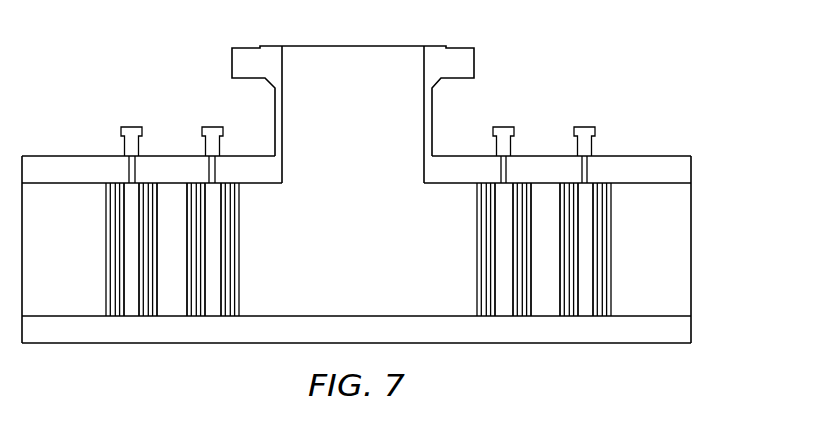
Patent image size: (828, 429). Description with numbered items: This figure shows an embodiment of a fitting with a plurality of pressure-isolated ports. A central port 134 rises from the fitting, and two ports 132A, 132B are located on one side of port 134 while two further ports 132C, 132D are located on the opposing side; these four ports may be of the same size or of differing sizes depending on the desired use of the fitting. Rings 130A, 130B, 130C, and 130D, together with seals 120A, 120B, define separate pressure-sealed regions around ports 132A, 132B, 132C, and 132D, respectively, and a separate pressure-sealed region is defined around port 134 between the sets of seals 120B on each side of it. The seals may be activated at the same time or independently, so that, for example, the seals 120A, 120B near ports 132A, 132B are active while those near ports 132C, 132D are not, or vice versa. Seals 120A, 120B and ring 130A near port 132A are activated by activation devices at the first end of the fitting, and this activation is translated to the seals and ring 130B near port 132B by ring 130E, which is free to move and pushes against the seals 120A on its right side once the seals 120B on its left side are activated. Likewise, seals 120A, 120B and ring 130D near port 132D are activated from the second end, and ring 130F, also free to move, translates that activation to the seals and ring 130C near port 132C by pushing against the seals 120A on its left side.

The port 134 is at (402, 46).
The port 132A is at (132, 127).
The port 132B is at (210, 127).
The port 132C is at (505, 126).
The port 132D is at (588, 126).
The seal 120A is at (113, 295).
The seal 120B is at (148, 256).
The ring 130A is at (132, 222).
The ring 130B is at (212, 245).
The ring 130C is at (501, 248).
The ring 130D is at (587, 242).
The ring 130E is at (169, 310).
The ring 130F is at (547, 306).